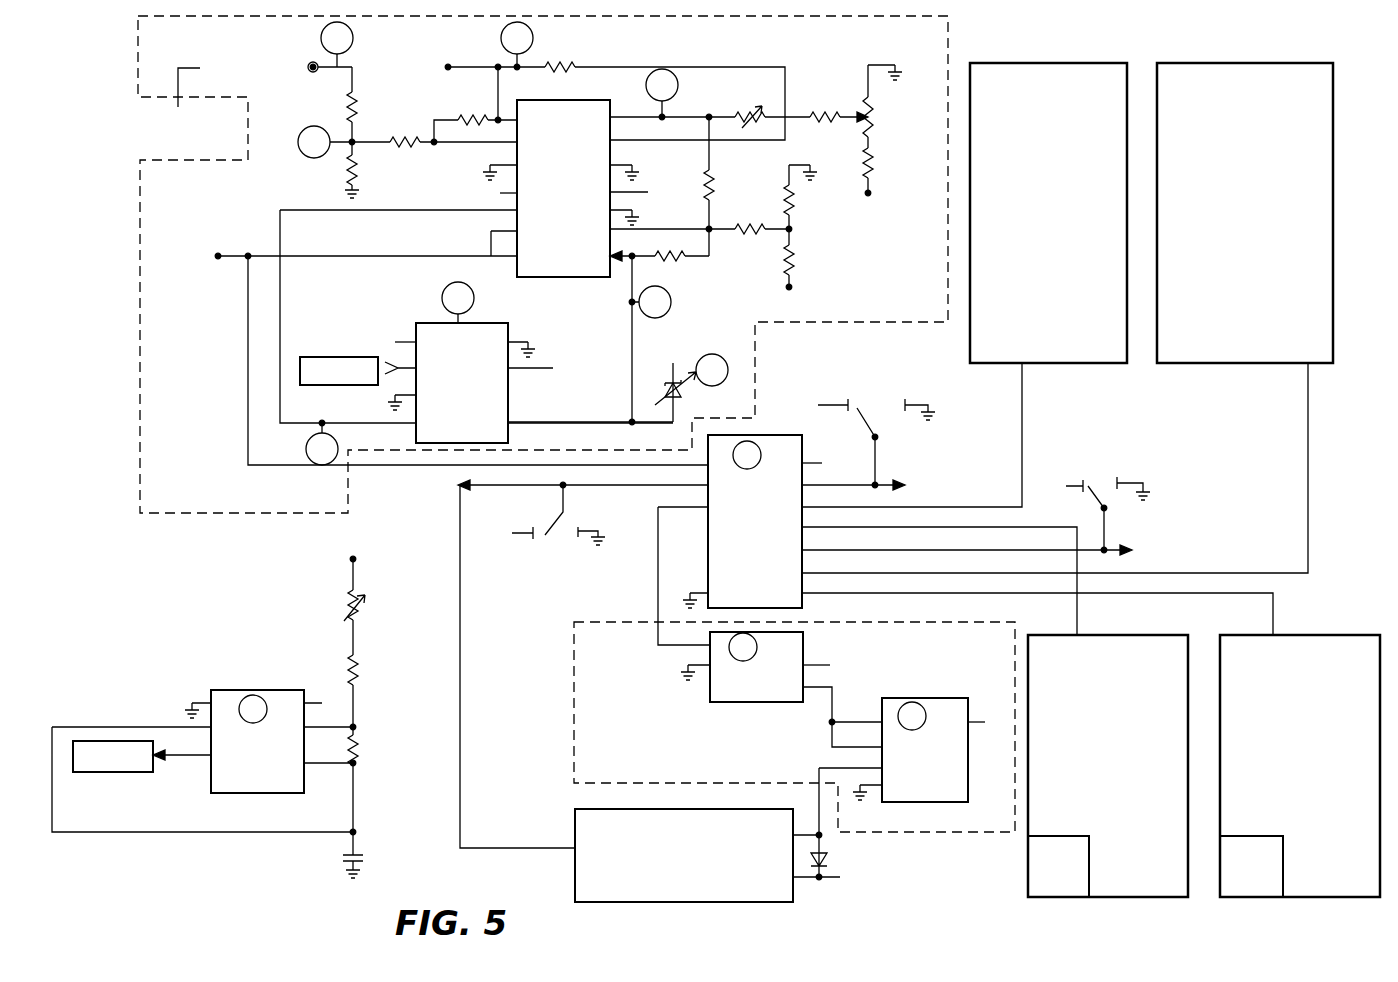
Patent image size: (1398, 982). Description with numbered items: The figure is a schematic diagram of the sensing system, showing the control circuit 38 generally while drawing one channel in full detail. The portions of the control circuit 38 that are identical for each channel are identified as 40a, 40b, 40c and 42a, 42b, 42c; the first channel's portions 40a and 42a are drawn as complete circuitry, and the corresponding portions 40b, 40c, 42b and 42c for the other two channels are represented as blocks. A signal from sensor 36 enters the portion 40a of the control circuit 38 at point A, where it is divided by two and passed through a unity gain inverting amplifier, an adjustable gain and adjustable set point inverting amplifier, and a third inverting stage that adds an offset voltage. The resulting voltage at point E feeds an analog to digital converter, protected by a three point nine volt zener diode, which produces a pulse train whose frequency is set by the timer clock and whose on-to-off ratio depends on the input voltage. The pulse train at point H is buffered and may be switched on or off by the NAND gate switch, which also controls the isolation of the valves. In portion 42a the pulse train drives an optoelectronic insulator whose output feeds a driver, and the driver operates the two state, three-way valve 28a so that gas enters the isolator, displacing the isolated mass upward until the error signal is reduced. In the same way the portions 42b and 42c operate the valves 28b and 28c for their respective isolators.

The control circuit 38 is at (1352, 402).
The control circuit portion 40a is at (138, 50).
The control circuit portion 40b is at (1060, 212).
The control circuit portion 40c is at (1259, 212).
The control circuit portion 42a is at (574, 686).
The control circuit portion 42b is at (1133, 745).
The control circuit portion 42c is at (1319, 745).
The three-way two position valve 28a is at (703, 899).
The valve 28b is at (1071, 879).
The valve 28c is at (1265, 879).
The sensor 36 is at (184, 109).